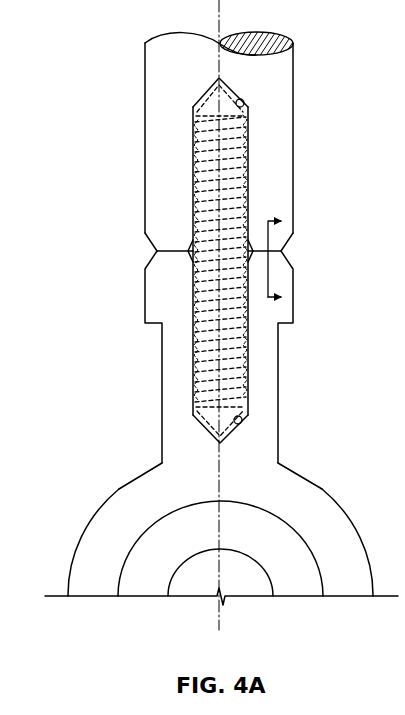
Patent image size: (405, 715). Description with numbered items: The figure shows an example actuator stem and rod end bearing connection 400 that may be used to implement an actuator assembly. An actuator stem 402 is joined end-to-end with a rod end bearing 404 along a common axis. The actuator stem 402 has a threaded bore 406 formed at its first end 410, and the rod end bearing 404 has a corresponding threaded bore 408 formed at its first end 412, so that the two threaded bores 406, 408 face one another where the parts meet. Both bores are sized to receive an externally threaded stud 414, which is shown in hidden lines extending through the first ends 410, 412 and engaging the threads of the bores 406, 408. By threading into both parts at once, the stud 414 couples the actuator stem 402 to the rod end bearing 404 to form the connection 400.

The actuator stem and rod end bearing connection 400 is at (121, 251).
The actuator stem 402 is at (293, 83).
The rod end bearing 404 is at (116, 487).
The threaded bore 406 is at (248, 115).
The threaded bore 408 is at (245, 420).
The first end 410 is at (145, 147).
The first end 412 is at (146, 296).
The externally threaded stud 414 is at (252, 187).